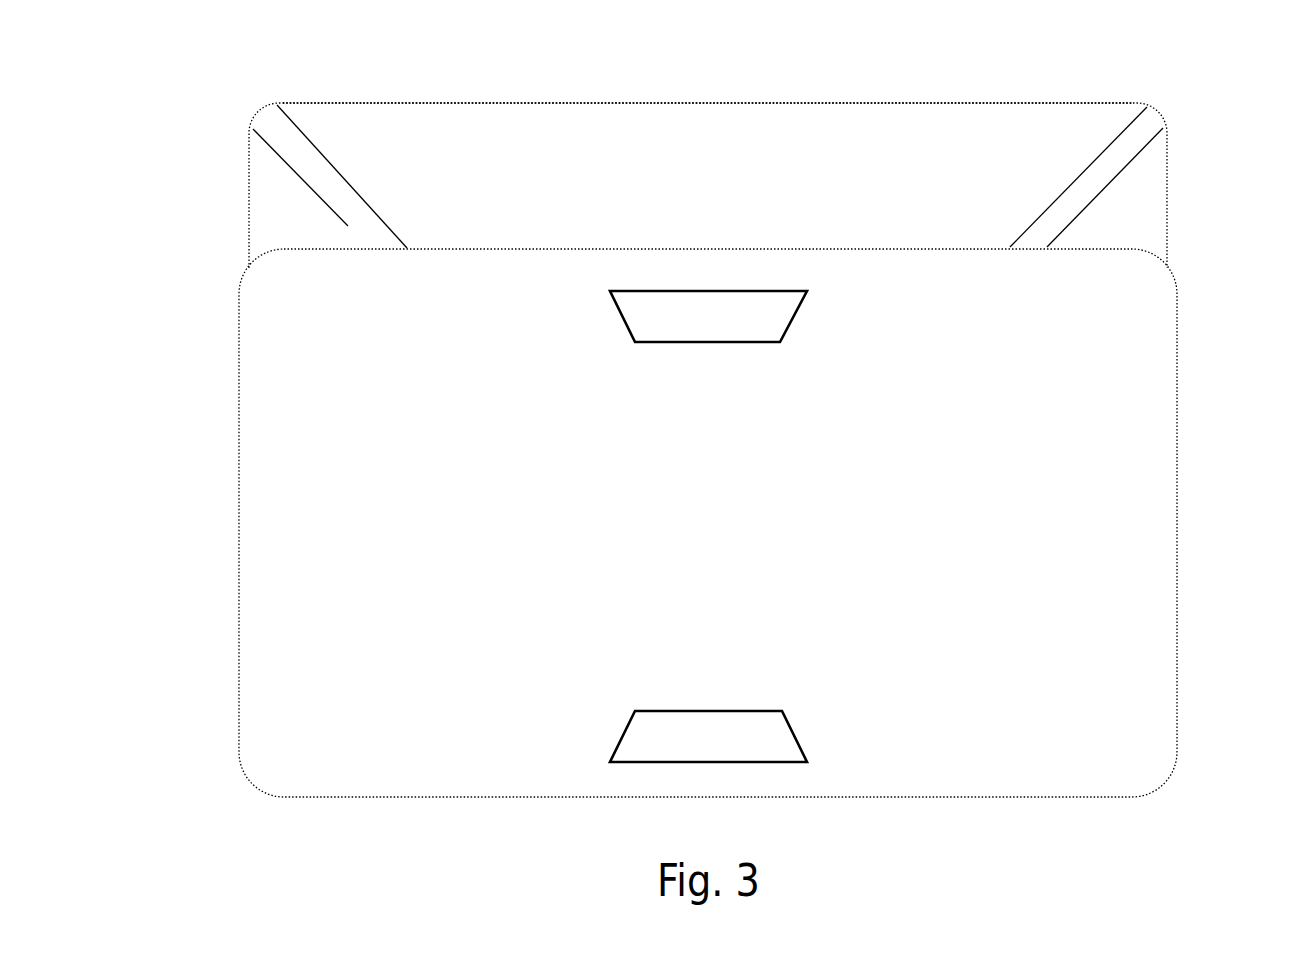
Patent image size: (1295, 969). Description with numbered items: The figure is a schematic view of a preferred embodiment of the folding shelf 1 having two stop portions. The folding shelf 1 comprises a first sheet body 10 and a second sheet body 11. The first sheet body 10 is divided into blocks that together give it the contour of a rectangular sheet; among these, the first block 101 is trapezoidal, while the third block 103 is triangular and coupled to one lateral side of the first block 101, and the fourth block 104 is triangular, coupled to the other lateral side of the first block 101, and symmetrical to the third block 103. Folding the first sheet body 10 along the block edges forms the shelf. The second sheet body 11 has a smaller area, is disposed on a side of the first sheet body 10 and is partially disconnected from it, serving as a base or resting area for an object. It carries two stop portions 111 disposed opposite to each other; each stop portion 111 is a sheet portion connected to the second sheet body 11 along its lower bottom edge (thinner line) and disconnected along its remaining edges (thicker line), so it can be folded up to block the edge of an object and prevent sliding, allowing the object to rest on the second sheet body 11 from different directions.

The folding shelf 1 is at (138, 149).
The first sheet body 10 is at (678, 103).
The first block 101 is at (485, 160).
The third block 103 is at (273, 208).
The fourth block 104 is at (1122, 217).
The second sheet body 11 is at (1178, 590).
The stop portion 111 is at (750, 291).